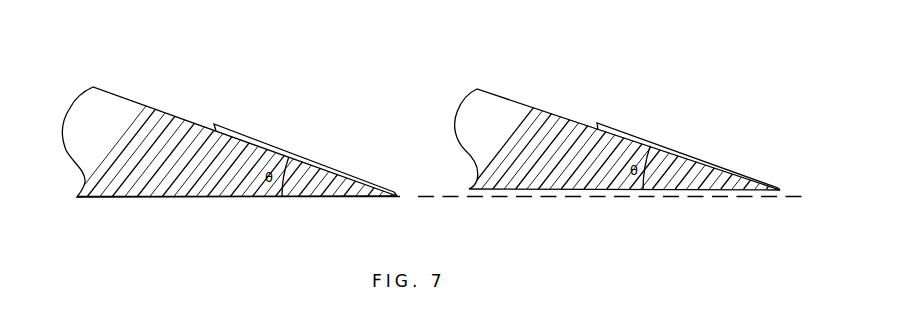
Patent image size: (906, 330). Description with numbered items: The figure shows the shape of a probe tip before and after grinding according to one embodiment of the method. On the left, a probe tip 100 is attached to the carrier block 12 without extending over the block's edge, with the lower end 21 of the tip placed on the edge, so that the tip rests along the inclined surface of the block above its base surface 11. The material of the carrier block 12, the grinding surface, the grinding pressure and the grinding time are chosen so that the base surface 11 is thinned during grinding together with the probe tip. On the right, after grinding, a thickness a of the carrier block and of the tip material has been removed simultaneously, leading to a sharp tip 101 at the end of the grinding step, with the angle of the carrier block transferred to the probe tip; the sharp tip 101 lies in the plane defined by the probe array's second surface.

The carrier block 12 is at (131, 101).
The base surface 11 is at (190, 197).
The probe tip 100 is at (397, 192).
The lower end of the tip 21 is at (397, 196).
The sharp tip 101 is at (777, 188).
The thickness a is at (625, 190).